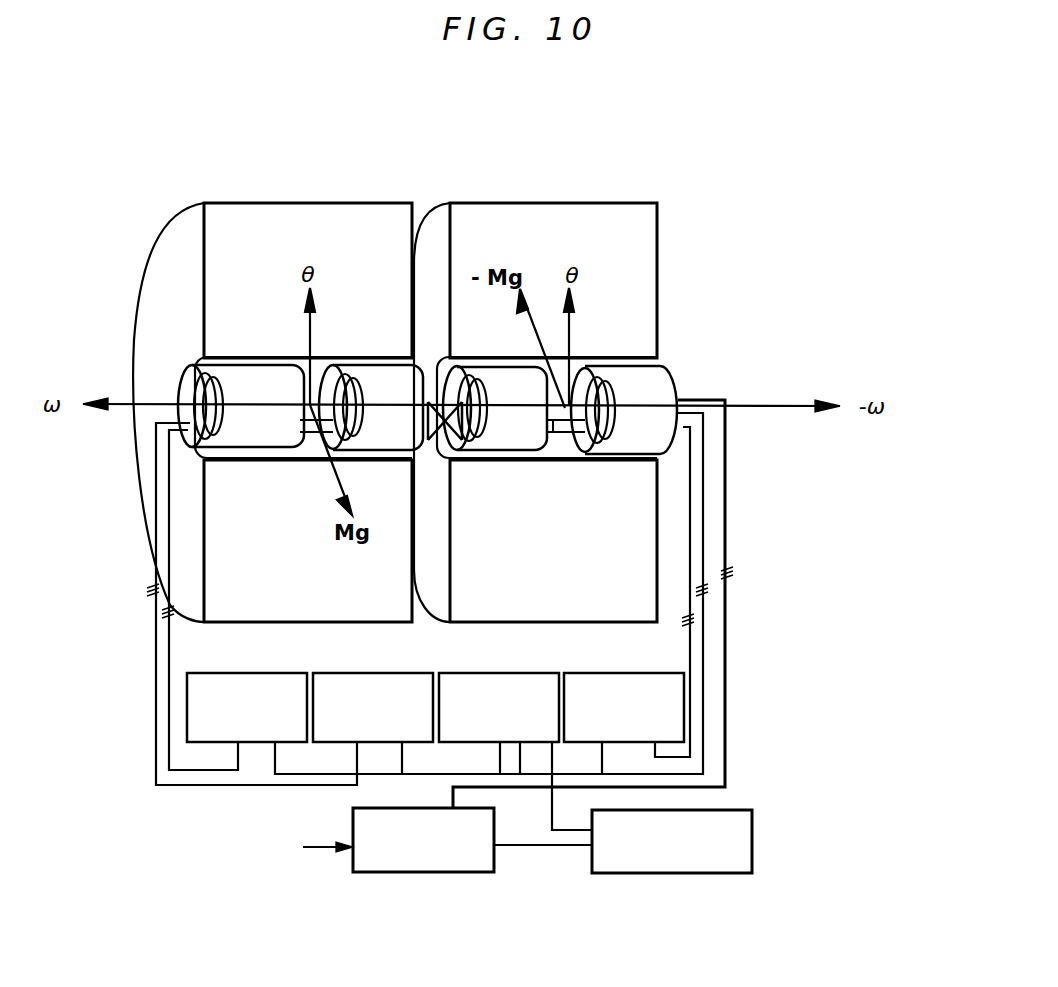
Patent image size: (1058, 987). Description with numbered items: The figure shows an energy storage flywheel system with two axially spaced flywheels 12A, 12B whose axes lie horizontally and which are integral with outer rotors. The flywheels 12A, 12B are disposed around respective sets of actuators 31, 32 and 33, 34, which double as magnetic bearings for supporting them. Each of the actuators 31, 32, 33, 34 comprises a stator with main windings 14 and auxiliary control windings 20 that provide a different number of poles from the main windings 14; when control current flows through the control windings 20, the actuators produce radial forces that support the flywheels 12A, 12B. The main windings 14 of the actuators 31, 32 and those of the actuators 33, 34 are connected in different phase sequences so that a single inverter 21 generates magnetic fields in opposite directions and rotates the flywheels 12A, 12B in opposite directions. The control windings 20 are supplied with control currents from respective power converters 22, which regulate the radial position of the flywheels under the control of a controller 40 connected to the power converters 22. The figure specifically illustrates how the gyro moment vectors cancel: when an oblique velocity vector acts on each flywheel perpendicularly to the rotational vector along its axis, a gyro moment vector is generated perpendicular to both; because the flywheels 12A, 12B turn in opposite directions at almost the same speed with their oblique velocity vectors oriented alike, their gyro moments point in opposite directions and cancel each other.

The flywheel 12A is at (297, 203).
The flywheel 12B is at (551, 203).
The main winding 14 is at (442, 400).
The auxiliary control winding 20 is at (156, 456).
The inverter 21 is at (453, 872).
The power converter 22 is at (187, 714).
The actuator 31 is at (241, 406).
The actuator 32 is at (371, 407).
The actuator 33 is at (495, 408).
The actuator 34 is at (624, 410).
The controller 40 is at (680, 873).